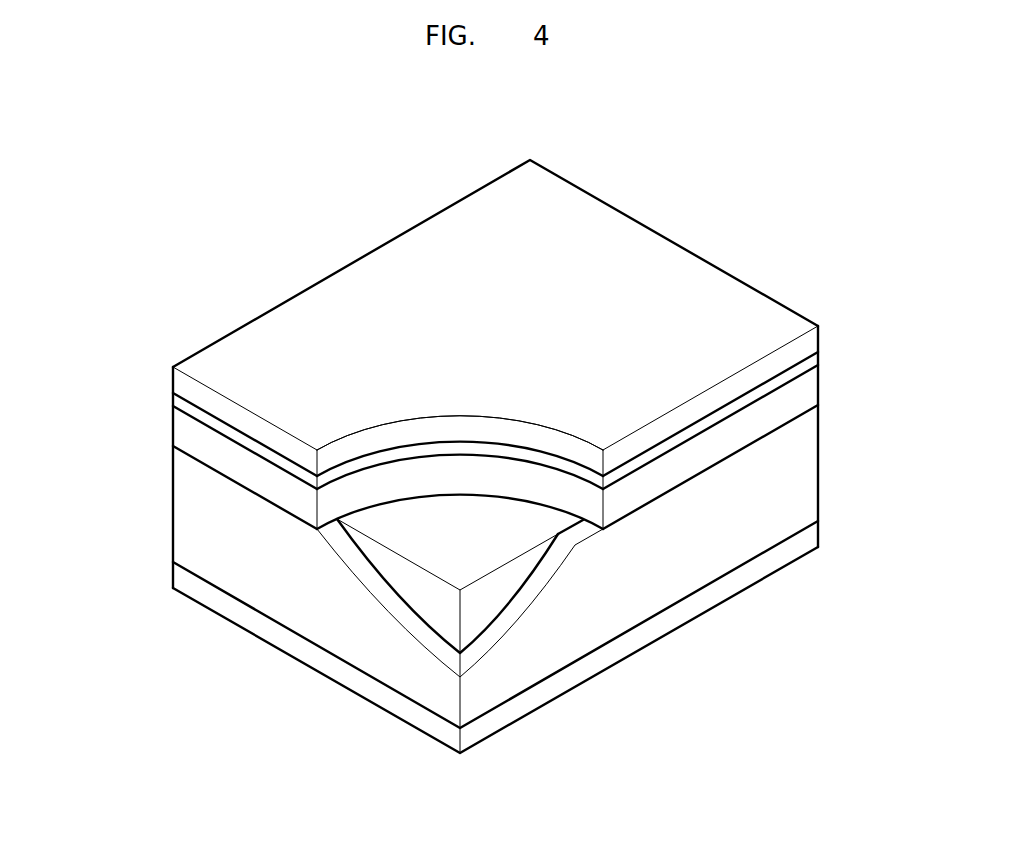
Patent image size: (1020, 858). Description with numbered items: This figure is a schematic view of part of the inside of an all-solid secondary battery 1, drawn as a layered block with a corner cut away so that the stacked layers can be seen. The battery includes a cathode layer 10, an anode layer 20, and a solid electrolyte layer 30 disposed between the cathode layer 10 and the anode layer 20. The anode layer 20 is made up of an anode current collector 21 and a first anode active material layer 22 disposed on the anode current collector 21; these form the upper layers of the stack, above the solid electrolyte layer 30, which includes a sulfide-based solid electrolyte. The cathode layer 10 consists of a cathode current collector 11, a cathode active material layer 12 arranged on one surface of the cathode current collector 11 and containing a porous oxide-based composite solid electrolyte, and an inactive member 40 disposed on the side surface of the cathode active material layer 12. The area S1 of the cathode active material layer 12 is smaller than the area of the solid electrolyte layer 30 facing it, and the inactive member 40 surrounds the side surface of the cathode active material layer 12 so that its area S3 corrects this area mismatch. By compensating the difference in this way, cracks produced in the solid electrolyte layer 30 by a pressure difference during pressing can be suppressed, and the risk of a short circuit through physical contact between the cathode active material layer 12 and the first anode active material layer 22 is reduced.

The all-solid secondary battery 1 is at (786, 143).
The cathode layer 10 is at (495, 658).
The cathode current collector 11 is at (512, 708).
The cathode active material layer 12 is at (500, 597).
The anode layer 20 is at (435, 324).
The anode current collector 21 is at (178, 382).
The first anode active material layer 22 is at (178, 399).
The solid electrolyte layer 30 is at (182, 428).
The inactive member 40 is at (640, 577).
The area of the cathode active material layer S1 is at (458, 528).
The area of the inactive member S3 is at (579, 530).